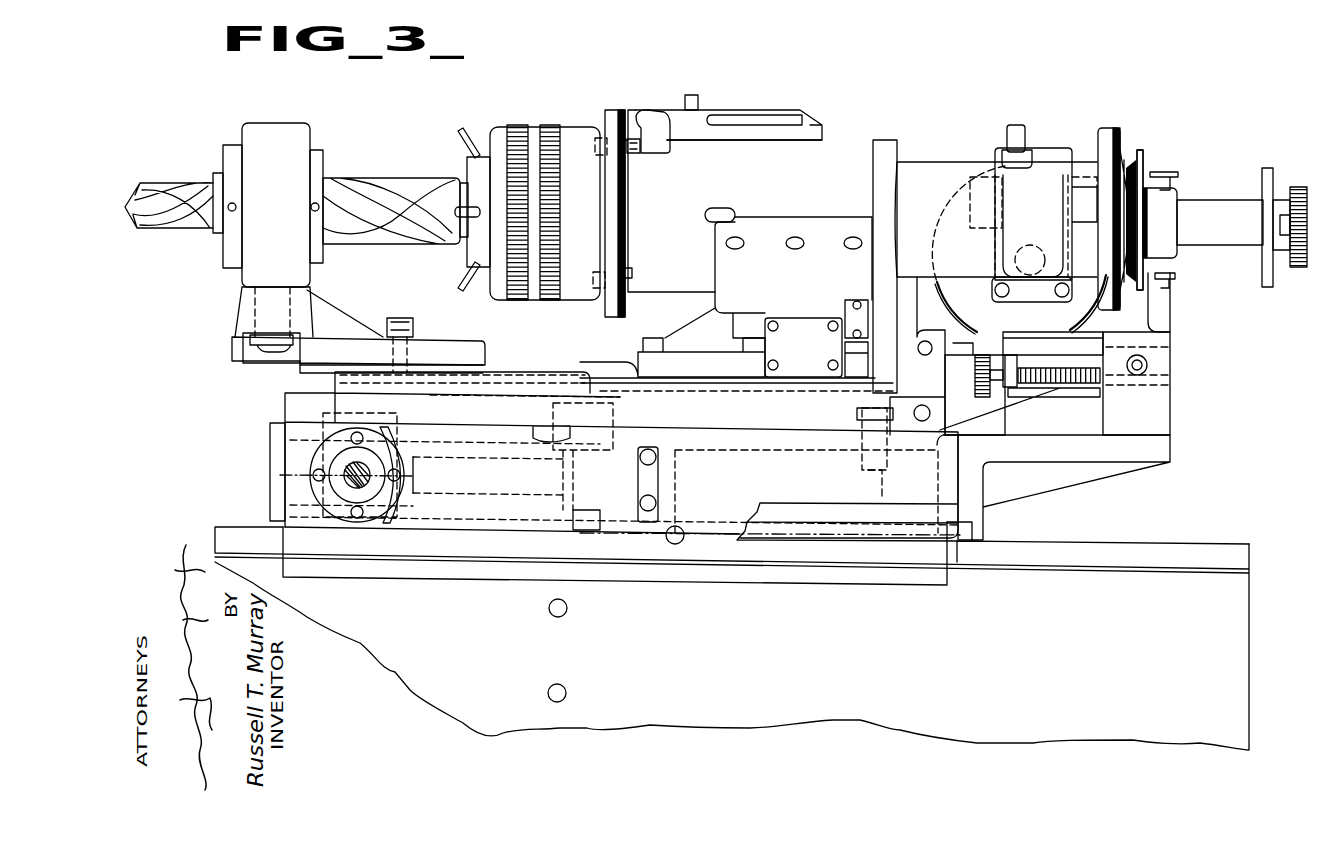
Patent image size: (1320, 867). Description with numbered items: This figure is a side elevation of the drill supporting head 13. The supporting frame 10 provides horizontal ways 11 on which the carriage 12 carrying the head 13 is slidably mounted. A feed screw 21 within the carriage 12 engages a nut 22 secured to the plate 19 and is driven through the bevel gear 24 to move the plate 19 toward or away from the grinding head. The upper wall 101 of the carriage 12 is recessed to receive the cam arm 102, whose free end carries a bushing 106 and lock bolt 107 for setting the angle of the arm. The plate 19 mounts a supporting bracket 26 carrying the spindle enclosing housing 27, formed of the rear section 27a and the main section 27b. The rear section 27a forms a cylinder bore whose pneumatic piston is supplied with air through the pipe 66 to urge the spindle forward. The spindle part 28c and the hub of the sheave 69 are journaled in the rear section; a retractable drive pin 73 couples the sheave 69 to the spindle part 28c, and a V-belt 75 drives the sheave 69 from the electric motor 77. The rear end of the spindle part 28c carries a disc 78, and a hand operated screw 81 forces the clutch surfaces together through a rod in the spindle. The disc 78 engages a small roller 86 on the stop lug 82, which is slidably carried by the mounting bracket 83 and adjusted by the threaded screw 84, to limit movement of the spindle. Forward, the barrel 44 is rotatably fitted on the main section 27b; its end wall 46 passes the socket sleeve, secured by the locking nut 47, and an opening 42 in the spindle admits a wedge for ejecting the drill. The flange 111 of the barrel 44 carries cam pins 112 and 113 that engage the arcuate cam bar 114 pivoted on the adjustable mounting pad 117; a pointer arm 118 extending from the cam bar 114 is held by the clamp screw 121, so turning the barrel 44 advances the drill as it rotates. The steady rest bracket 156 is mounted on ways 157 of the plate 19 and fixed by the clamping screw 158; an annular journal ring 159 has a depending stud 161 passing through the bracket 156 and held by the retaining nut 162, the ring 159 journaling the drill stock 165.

The supporting frame 10 is at (1250, 667).
The horizontal ways 11 is at (1135, 550).
The carriage 12 is at (690, 560).
The drill supporting head 13 is at (814, 111).
The plate 19 is at (608, 380).
The feed screw 21 is at (463, 487).
The nut 22 is at (565, 512).
The bevel gear 24 is at (394, 521).
The supporting bracket 26 is at (688, 332).
The spindle enclosing housing 27 is at (862, 147).
The rear section of housing 27a is at (923, 166).
The main section of housing 27b is at (840, 140).
The spindle part 28c is at (1207, 207).
The opening 42 is at (727, 208).
The cup-shaped shell or barrel 44 is at (534, 127).
The end wall 46 is at (488, 133).
The locking nut 47 is at (470, 167).
The pipe 66 is at (1008, 131).
The sheave 69 is at (1126, 149).
The retractable drive pin 73 is at (1168, 172).
The V-belt 75 is at (1110, 132).
The electric motor 77 is at (954, 219).
The disc 78 is at (1267, 168).
The hand operated screw 81 is at (1297, 187).
The stop lug 82 is at (1167, 330).
The mounting bracket 83 is at (1167, 397).
The threaded screw 84 is at (1057, 397).
The small roller 86 is at (1175, 285).
The upper wall of carriage 101 is at (720, 447).
The cam arm 102 is at (740, 410).
The bushing 106 is at (890, 449).
The lock bolt 107 is at (865, 467).
The flange 111 is at (611, 110).
The cam pin 112 is at (636, 154).
The cam pin 113 is at (633, 272).
The arcuate cam bar 114 is at (651, 113).
The adjustable mounting pad 117 is at (766, 126).
The pointer arm 118 is at (726, 117).
The clamp screw 121 is at (691, 95).
The bracket 156 is at (436, 348).
The ways 157 is at (513, 373).
The clamping screw 158 is at (400, 318).
The annular journal ring 159 is at (280, 118).
The depending stud 161 is at (253, 300).
The retaining nut 162 is at (247, 363).
The drill stock 165 is at (368, 158).